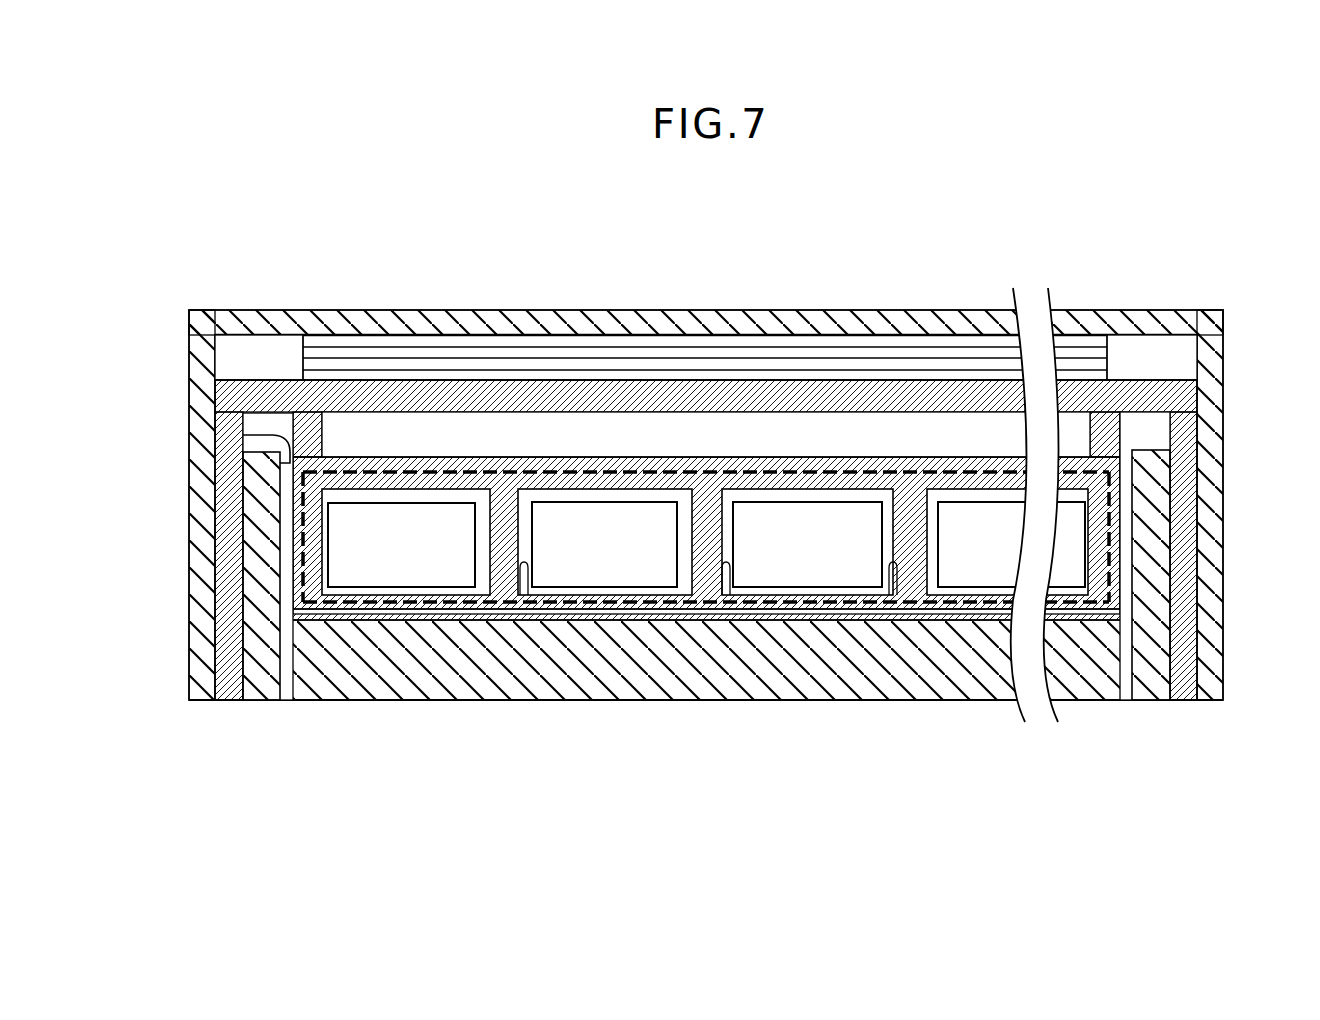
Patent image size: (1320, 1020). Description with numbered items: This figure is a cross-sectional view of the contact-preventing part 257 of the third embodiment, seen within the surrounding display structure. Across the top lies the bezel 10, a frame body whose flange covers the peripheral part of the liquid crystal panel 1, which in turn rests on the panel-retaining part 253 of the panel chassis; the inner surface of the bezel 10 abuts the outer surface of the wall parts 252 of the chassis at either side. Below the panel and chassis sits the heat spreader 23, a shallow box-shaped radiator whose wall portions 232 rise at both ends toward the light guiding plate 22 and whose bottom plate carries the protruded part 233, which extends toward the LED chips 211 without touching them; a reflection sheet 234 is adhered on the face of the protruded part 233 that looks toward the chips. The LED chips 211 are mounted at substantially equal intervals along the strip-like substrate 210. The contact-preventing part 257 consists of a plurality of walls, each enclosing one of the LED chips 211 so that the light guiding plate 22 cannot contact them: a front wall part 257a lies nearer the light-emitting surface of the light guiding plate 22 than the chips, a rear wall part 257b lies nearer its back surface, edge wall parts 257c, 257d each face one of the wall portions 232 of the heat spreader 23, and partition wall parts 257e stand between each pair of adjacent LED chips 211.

The liquid crystal panel 1 is at (731, 347).
The bezel 10 is at (282, 310).
The light guiding plate 22 is at (848, 471).
The heat spreader 23 is at (290, 700).
The substrate 210 is at (243, 442).
The LED chips 211 is at (377, 577).
The wall portions 232 is at (247, 563).
The protruded part 233 is at (312, 643).
The reflection sheet 234 is at (268, 611).
The wall parts 252 is at (227, 512).
The panel-retaining part 253 is at (215, 375).
The contact-preventing part 257 is at (628, 438).
The front wall part 257a is at (488, 456).
The rear wall part 257b is at (430, 605).
The edge wall part 257c is at (303, 500).
The edge wall part 257d is at (1115, 580).
The partition wall part 257e is at (523, 566).